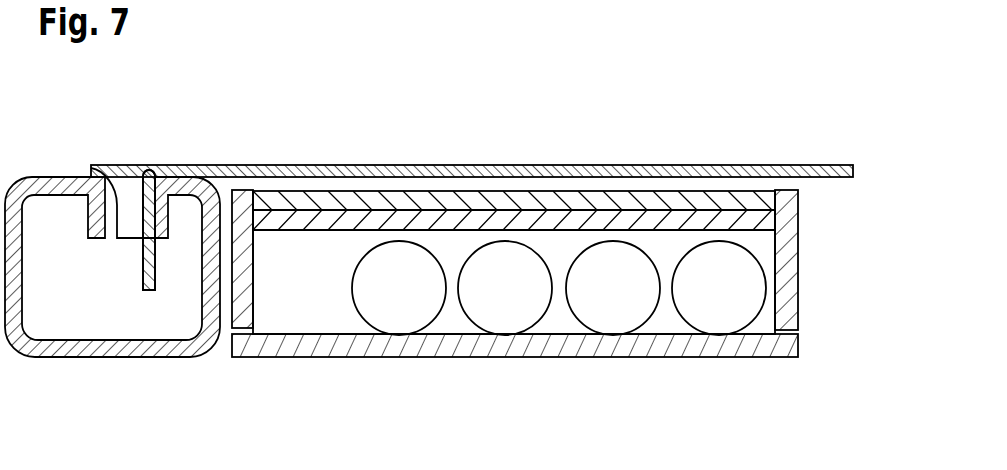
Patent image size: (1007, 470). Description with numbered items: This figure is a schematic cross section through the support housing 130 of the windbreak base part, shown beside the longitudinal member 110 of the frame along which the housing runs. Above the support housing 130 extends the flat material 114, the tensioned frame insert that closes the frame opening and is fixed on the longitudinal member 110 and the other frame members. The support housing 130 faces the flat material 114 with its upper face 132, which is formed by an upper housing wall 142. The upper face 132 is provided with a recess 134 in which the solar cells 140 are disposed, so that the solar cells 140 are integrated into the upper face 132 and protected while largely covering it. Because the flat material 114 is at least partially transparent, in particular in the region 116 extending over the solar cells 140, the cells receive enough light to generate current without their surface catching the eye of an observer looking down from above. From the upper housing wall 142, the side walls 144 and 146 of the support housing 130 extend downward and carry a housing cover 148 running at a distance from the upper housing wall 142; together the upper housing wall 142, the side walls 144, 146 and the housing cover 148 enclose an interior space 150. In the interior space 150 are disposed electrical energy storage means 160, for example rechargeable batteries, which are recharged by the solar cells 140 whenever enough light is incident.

The longitudinal member 110 is at (72, 178).
The flat material 114 is at (493, 167).
The region 116 is at (342, 167).
The support housing 130 is at (558, 309).
The upper face 132 is at (427, 210).
The recess 134 is at (553, 207).
The solar cells 140 is at (514, 167).
The upper housing wall 142 is at (620, 218).
The side wall 144 is at (787, 303).
The side wall 146 is at (242, 318).
The housing cover 148 is at (722, 347).
The interior space 150 is at (563, 320).
The electrical energy storage means 160 is at (497, 308).